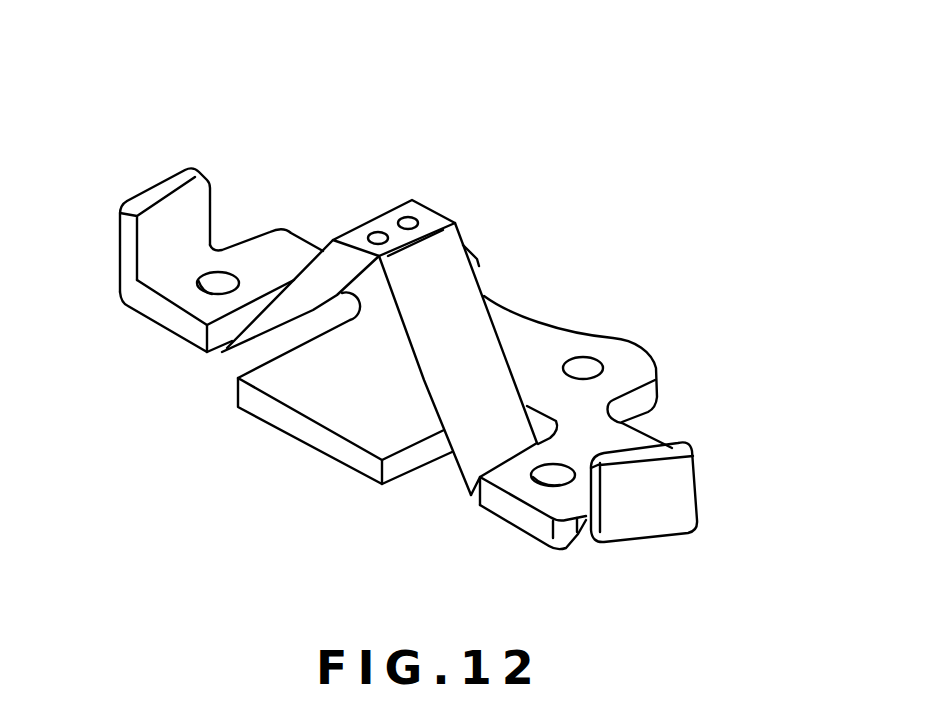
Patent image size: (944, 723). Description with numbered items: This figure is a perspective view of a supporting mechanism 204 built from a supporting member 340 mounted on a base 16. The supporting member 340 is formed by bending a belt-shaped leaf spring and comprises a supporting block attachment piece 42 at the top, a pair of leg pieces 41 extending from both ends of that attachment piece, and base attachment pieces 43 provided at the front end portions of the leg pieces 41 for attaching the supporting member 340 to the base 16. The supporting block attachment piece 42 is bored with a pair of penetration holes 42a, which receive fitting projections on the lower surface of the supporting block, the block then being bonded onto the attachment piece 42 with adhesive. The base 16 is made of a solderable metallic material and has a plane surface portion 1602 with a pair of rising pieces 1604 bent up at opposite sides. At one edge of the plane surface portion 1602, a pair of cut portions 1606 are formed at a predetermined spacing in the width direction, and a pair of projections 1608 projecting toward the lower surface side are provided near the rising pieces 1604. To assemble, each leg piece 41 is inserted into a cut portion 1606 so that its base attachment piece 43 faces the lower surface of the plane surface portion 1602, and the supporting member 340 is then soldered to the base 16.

The mounting assembly 204 is at (524, 38).
The supporting member 340 is at (557, 213).
The base 16 is at (689, 329).
The plane surface portion 1602 is at (310, 393).
The rising pieces 1604 is at (195, 212).
The cut portions 1606 is at (244, 393).
The projections 1608 is at (193, 280).
The leg pieces 41 is at (448, 316).
The supporting block attachment piece 42 is at (418, 208).
The penetration holes 42a is at (373, 232).
The base attachment pieces 43 is at (226, 350).